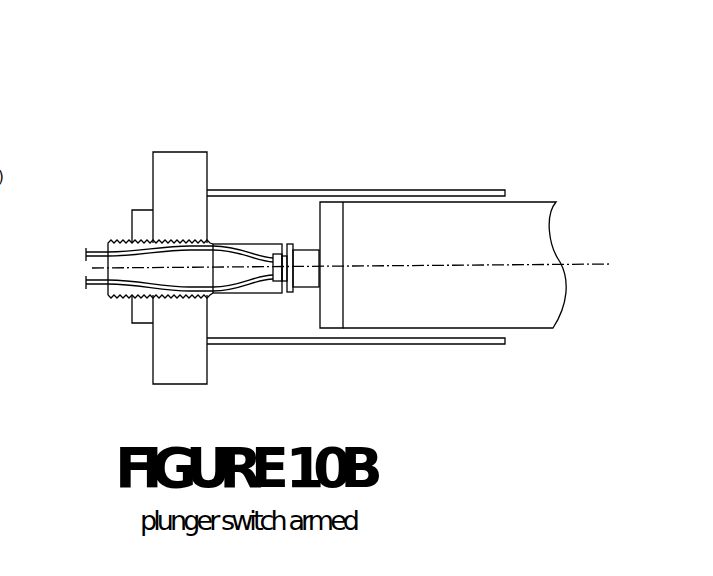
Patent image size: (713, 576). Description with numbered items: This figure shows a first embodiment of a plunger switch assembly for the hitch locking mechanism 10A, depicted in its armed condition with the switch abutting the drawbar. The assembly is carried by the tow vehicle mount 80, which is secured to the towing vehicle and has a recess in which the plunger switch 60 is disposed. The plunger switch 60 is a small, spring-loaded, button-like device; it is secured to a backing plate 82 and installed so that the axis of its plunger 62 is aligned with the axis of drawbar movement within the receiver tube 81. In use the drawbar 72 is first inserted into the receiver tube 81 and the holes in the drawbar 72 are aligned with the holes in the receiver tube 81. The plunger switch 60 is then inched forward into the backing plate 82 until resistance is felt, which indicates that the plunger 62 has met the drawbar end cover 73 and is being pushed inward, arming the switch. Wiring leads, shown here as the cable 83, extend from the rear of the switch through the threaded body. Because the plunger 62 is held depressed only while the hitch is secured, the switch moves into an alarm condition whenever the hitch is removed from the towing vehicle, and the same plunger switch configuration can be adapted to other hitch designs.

The hitch locking mechanism 10A is at (532, 300).
The plunger switch 60 is at (268, 246).
The plunger 62 is at (307, 252).
The drawbar 72 is at (518, 222).
The drawbar end cover 73 is at (330, 215).
The tow vehicle mount 80 is at (233, 318).
The receiver tube 81 is at (275, 327).
The backing plate 82 is at (193, 150).
The cable 83 is at (136, 277).